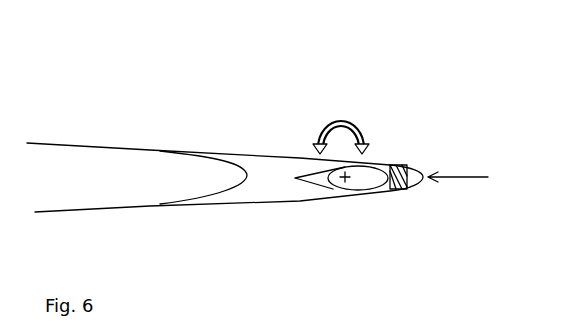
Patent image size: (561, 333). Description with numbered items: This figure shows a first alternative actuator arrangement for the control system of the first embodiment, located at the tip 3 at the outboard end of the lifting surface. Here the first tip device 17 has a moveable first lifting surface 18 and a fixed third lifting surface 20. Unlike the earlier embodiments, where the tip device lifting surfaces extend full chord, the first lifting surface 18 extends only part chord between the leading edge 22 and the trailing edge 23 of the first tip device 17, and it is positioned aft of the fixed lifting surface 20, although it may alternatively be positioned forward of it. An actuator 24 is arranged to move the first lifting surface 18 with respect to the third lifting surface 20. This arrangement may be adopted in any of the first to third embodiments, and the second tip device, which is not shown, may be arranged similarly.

The tip 3 is at (87, 122).
The first tip device 17 is at (355, 222).
The first lifting surface 18 is at (324, 188).
The third lifting surface 20 is at (399, 147).
The leading edge 22 is at (473, 178).
The trailing edge 23 is at (286, 165).
The actuator 24 is at (403, 196).